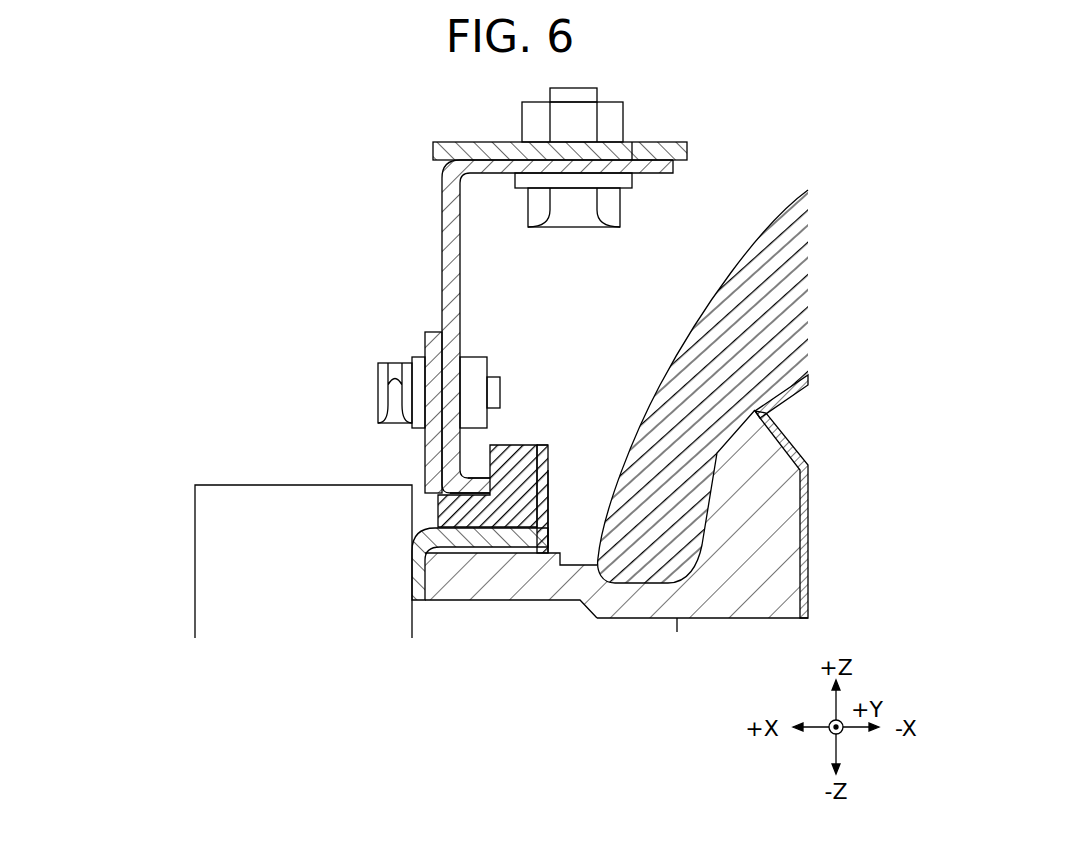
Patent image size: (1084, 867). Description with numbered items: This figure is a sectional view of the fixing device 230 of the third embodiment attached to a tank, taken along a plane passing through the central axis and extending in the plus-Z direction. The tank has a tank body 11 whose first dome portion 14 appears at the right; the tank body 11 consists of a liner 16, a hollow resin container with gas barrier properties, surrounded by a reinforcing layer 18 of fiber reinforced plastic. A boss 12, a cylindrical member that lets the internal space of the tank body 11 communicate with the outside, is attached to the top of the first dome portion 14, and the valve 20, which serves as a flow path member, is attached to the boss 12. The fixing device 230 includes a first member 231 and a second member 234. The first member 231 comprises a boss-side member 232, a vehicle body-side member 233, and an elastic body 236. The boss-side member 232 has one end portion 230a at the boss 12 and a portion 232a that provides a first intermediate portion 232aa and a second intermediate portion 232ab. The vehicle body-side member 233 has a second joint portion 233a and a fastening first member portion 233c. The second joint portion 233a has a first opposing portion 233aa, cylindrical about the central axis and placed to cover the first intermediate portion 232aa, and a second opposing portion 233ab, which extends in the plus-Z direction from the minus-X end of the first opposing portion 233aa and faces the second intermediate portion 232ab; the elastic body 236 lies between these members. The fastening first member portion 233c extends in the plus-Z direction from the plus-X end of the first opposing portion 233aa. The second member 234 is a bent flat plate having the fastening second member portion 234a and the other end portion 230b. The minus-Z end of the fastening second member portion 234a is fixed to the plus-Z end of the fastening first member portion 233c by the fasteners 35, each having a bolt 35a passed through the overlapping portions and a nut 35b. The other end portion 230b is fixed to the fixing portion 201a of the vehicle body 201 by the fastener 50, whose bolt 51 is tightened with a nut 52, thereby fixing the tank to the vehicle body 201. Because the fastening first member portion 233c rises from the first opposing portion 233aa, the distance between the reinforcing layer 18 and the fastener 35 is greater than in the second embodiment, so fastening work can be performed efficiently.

The fixing device 230 is at (218, 163).
The vehicle body 201 is at (482, 140).
The fixing portion 201a is at (633, 153).
The first dome portion 14 is at (770, 185).
The tank body 11 is at (743, 344).
The reinforcing layer 18 is at (798, 292).
The liner 16 is at (785, 437).
The boss 12 is at (783, 530).
The valve 20 is at (220, 545).
The fastener 50 is at (627, 165).
The nut 52 is at (607, 122).
The bolt 51 is at (608, 207).
The second member 234 is at (283, 165).
The other end portion 230b is at (492, 172).
The fastening second member portion 234a is at (450, 280).
The fastener 35 is at (285, 258).
The nut 35b is at (435, 345).
The bolt 35a is at (418, 365).
The first member 231 is at (207, 367).
The vehicle body-side member 233 is at (290, 407).
The fastening first member portion 233c is at (432, 403).
The second joint portion 233a is at (272, 422).
The second opposing portion 233ab is at (478, 463).
The first opposing portion 233aa is at (435, 473).
The elastic body 236 is at (520, 445).
The boss-side member 232 is at (481, 580).
The standing wall portion 232a is at (527, 283).
The second intermediate portion 232ab is at (537, 445).
The first intermediate portion 232aa is at (549, 550).
The lower fixing portion 230a is at (428, 568).